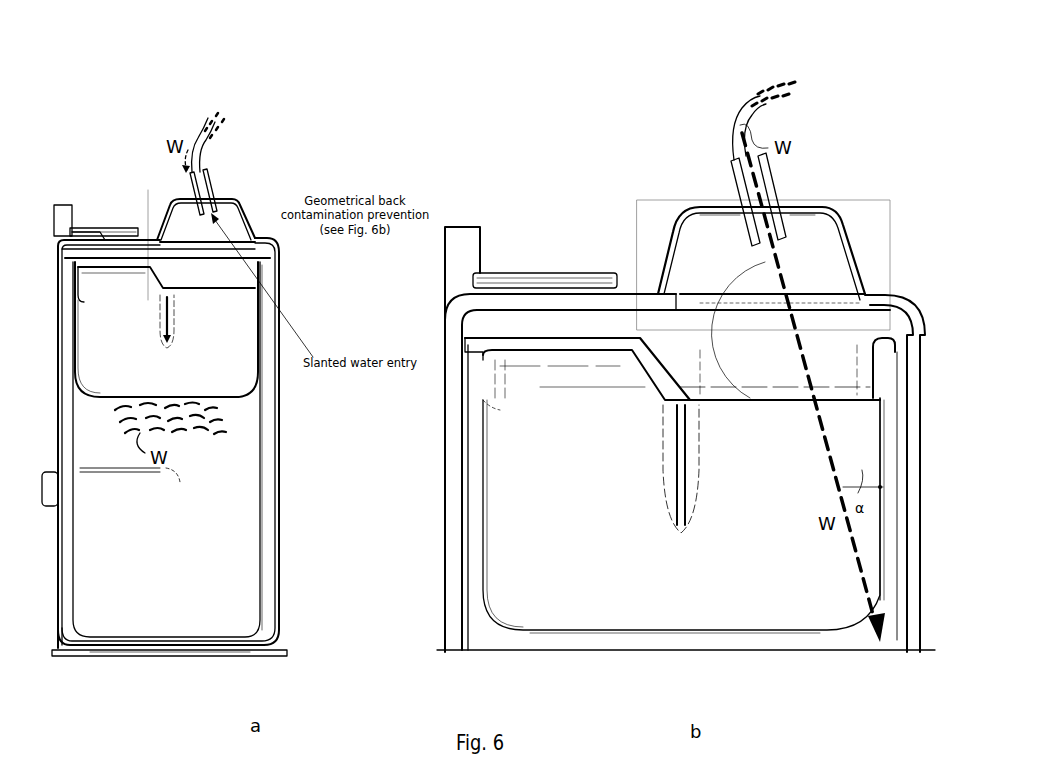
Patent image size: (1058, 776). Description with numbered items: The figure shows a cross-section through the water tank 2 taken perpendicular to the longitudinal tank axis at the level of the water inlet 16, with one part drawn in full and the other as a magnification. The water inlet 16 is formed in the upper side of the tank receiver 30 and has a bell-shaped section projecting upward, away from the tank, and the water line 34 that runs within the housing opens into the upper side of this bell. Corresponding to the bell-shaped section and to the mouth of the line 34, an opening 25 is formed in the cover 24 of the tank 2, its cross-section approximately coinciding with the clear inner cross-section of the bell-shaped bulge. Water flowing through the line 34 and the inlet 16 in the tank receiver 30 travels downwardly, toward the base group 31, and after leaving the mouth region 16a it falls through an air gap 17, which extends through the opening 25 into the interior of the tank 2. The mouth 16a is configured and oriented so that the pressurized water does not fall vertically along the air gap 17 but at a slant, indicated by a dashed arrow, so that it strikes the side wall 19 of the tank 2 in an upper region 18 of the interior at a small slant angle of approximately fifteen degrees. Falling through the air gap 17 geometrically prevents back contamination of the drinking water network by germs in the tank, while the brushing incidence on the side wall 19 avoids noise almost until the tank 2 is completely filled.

The water tank 2 is at (236, 514).
The water inlet 16 is at (165, 215).
The mouth region 16a is at (237, 192).
The air gap 17 is at (745, 292).
The upper region 18 is at (322, 366).
The side wall 19 is at (250, 324).
The cover 24 is at (108, 272).
The opening 25 is at (205, 250).
The tank receiver 30 is at (283, 560).
The base group 31 is at (283, 648).
The water line 34 is at (208, 148).